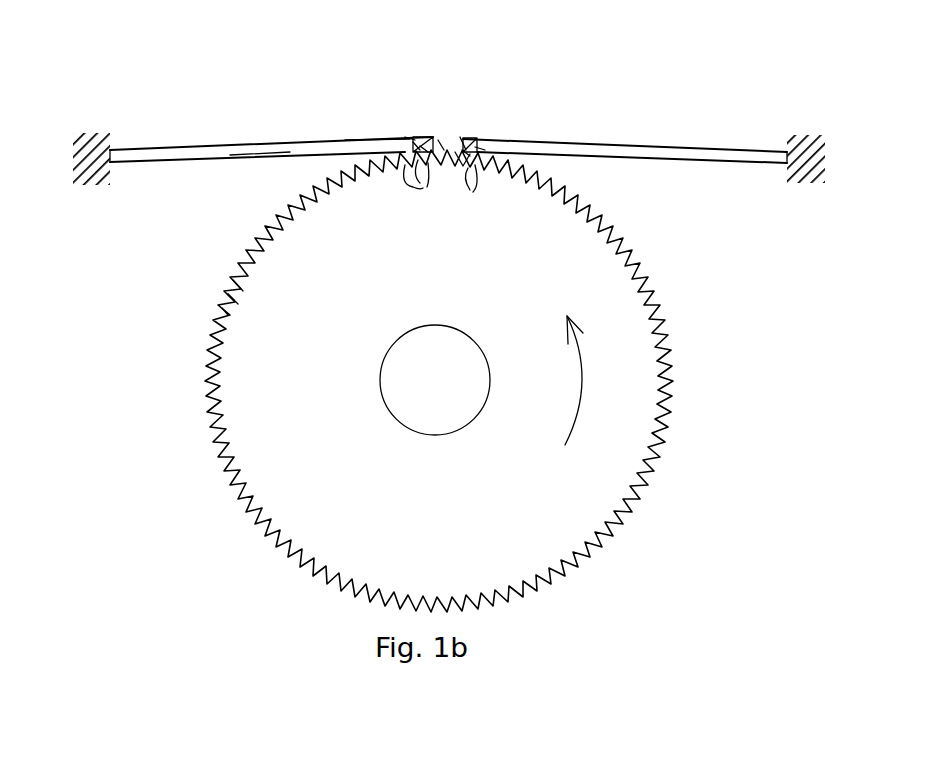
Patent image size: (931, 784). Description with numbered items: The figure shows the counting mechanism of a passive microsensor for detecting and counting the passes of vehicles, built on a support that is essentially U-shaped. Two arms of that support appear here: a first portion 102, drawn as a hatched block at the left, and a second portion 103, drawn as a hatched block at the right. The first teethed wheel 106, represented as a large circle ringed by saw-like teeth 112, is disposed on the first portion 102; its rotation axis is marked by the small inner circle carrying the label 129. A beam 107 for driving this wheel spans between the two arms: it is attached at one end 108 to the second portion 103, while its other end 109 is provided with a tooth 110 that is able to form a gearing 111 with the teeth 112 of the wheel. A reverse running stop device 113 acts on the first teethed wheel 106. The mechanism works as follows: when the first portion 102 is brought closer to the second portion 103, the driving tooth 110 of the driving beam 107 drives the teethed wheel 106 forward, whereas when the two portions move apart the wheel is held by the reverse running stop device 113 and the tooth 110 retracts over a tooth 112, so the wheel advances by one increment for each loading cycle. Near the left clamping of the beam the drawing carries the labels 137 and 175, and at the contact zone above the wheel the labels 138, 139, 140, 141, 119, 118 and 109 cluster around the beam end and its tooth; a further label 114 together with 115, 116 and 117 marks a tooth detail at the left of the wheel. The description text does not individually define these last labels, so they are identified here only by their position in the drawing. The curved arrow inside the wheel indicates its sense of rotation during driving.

The first portion 102 is at (98, 185).
The second portion 103 is at (810, 182).
The first teethed wheel 106 is at (439, 381).
The beam 107 is at (633, 150).
The end 108 is at (787, 150).
The end 109 is at (462, 137).
The tooth 110 is at (465, 150).
The gearing 111 is at (463, 168).
The teeth 112 is at (408, 166).
The reverse running stop device 113 is at (195, 142).
The tooth tip 114 is at (238, 280).
The tooth flank 115 is at (227, 312).
The cutting edge 116 is at (229, 305).
The tooth gap 117 is at (260, 297).
The cut edge 118 is at (477, 147).
The cutting zone 119 is at (440, 140).
The rotation axis 129 is at (435, 380).
The first clamped wire end 137 is at (110, 148).
The cut face 138 is at (415, 138).
The wire segment 139 is at (425, 142).
The cutting point 140 is at (418, 137).
The wire surface 141 is at (400, 140).
The wire section 175 is at (257, 156).